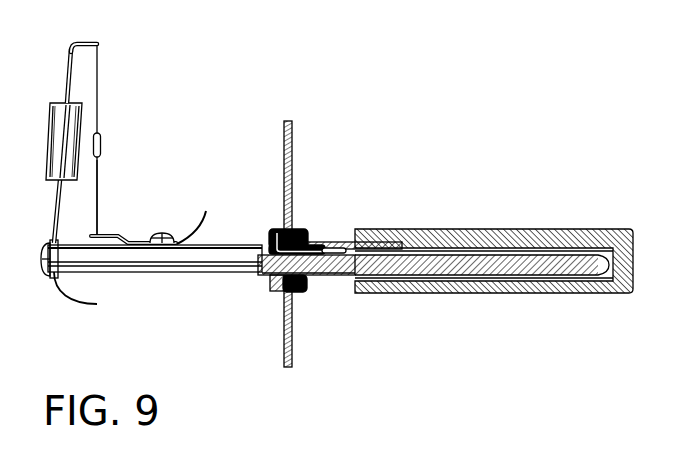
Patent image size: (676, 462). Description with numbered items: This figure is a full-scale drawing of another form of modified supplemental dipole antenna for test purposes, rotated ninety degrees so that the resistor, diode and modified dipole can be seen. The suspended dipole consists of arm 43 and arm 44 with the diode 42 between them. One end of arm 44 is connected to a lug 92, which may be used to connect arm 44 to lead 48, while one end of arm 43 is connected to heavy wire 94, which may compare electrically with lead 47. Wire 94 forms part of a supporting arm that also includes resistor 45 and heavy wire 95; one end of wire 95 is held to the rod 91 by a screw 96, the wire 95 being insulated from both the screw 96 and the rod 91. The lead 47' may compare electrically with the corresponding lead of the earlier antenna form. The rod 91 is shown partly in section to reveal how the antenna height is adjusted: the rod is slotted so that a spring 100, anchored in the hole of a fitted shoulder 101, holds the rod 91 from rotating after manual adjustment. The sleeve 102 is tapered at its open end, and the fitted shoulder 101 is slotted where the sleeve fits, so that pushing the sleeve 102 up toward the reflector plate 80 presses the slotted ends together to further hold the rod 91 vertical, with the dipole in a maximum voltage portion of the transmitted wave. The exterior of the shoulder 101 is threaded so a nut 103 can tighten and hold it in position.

The lead 47 is at (64, 36).
The lead 47' is at (73, 303).
The heavy wire 94 is at (64, 75).
The arm 43 is at (100, 91).
The resistor 45 is at (50, 151).
The diode 42 is at (101, 149).
The arm 44 is at (100, 210).
The lead 48 is at (190, 233).
The lug 92 is at (117, 239).
The heavy wire 95 is at (55, 221).
The screw 96 is at (41, 257).
The rod 91 is at (205, 244).
The reflector plate 80 is at (294, 171).
The spring 100 is at (342, 243).
The fitted shoulder 101 is at (271, 284).
The nut 103 is at (307, 288).
The sleeve 102 is at (477, 229).